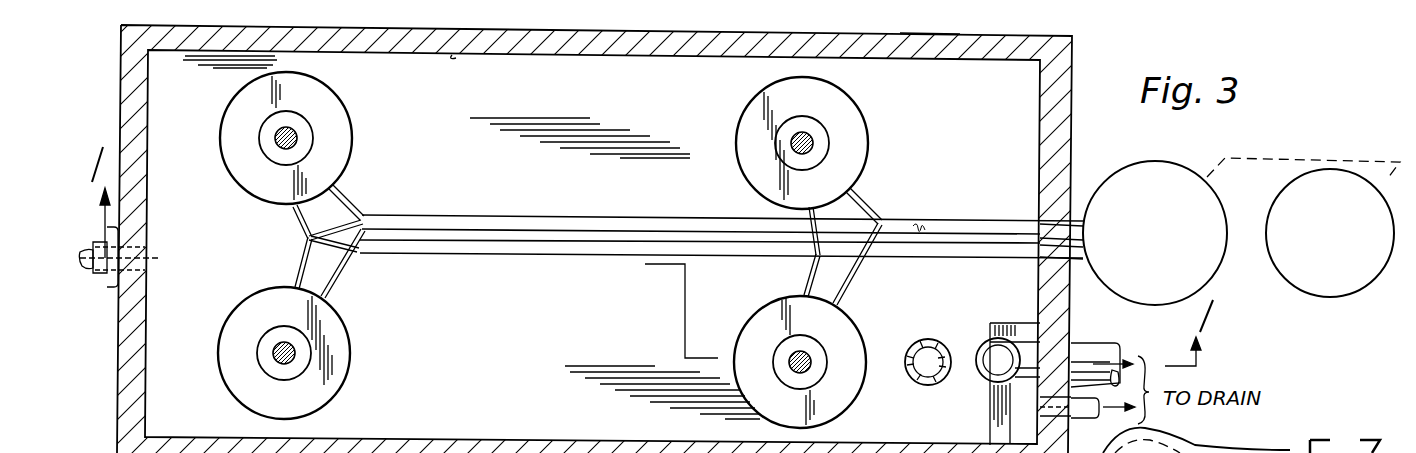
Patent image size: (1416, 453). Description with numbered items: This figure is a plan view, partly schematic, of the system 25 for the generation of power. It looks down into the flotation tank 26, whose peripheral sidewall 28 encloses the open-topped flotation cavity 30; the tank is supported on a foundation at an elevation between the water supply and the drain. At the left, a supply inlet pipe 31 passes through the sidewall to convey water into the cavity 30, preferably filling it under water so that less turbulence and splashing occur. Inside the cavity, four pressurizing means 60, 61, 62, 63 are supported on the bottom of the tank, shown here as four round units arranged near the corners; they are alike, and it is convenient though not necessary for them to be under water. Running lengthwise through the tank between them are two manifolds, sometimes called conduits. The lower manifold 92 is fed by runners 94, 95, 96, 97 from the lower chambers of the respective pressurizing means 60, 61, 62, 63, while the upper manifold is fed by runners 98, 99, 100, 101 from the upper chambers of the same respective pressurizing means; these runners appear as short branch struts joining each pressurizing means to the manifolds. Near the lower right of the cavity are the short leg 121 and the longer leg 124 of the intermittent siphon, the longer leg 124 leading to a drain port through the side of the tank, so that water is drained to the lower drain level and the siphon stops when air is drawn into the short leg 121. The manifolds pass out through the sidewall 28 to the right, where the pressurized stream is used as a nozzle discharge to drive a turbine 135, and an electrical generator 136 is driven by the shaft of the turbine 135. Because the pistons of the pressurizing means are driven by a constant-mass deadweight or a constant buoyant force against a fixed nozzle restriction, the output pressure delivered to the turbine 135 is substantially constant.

The system for the generation of power 25 is at (1076, 63).
The flotation tank 26 is at (922, 30).
The peripheral sidewall 28 is at (453, 56).
The flotation cavity 30 is at (546, 329).
The supply inlet pipe 31 is at (88, 276).
The pressurizing means 60 is at (856, 335).
The pressurizing means 61 is at (350, 344).
The pressurizing means 62 is at (862, 128).
The pressurizing means 63 is at (352, 122).
The lower manifold 92 is at (914, 257).
The runner 94 is at (805, 273).
The runner 95 is at (295, 266).
The runner 96 is at (806, 214).
The runner 97 is at (292, 222).
The runner 98 is at (852, 292).
The runner 99 is at (332, 284).
The runner 100 is at (868, 206).
The runner 101 is at (352, 200).
The short leg 121 is at (920, 386).
The longer leg 124 is at (990, 394).
The turbine 135 is at (1138, 280).
The electrical generator 136 is at (1314, 286).